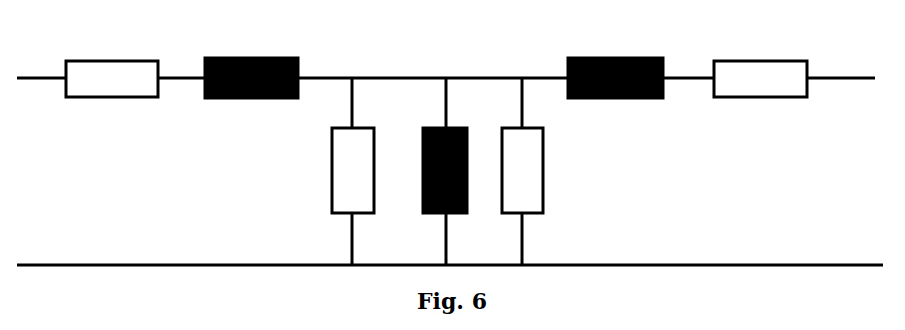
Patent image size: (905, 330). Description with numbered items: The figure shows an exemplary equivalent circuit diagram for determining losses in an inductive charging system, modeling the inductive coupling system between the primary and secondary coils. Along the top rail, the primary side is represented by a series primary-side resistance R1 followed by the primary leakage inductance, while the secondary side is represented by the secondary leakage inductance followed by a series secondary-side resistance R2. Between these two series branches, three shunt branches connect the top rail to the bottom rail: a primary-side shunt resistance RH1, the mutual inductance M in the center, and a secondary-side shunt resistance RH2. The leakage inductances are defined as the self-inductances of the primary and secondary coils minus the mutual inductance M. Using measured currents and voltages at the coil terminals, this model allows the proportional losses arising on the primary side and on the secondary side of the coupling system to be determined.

The primary-side resistance R1 is at (112, 56).
The secondary-side resistance R2 is at (760, 56).
The primary-side shunt resistance RH1 is at (320, 170).
The mutual inductance M is at (424, 170).
The secondary-side shunt resistance RH2 is at (552, 170).